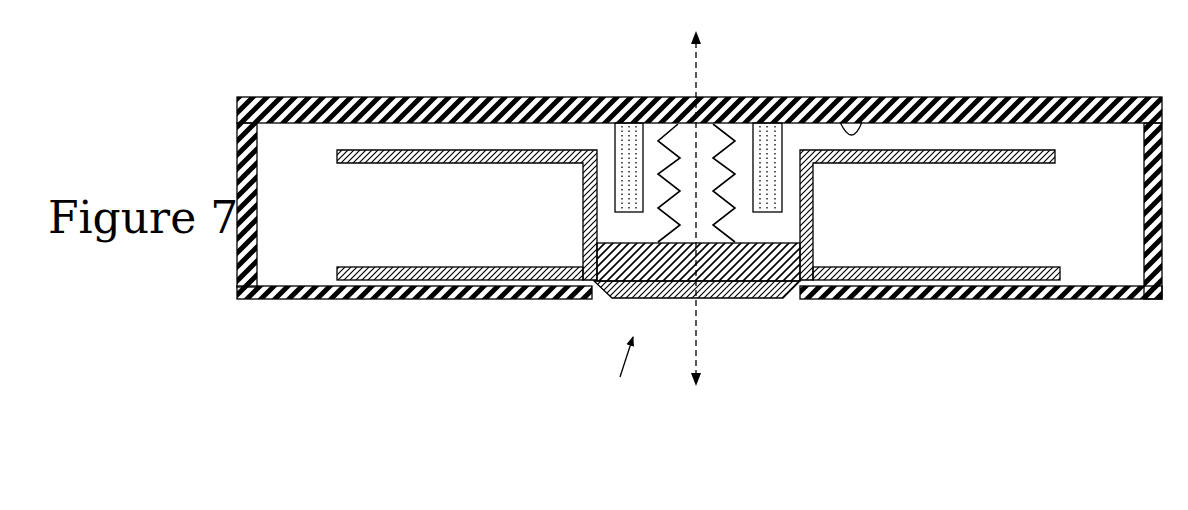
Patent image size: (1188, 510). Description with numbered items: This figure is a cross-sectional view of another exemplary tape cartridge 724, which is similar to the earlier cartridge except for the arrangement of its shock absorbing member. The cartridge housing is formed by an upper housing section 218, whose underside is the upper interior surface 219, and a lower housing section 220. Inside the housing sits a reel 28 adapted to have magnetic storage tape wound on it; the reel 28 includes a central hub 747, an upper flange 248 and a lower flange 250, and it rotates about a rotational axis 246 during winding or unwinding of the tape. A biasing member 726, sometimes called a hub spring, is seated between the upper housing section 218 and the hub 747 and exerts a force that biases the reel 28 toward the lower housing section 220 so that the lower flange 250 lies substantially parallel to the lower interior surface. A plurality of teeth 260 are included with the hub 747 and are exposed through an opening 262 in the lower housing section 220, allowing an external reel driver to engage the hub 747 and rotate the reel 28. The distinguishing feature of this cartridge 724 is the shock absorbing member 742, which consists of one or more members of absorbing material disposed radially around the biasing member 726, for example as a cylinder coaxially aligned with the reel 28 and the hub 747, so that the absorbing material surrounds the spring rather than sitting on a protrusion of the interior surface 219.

The cartridge 724 is at (285, 78).
The upper housing section 218 is at (910, 98).
The upper interior surface 219 is at (862, 122).
The lower housing section 220 is at (423, 300).
The upper flange 248 is at (400, 152).
The lower flange 250 is at (348, 279).
The reel 28 is at (525, 138).
The shock absorbing member 742 is at (629, 133).
The biasing member 726 is at (668, 135).
The hub 747 is at (773, 258).
The teeth 260 is at (614, 298).
The opening 262 is at (613, 376).
The rotational axis 246 is at (702, 330).